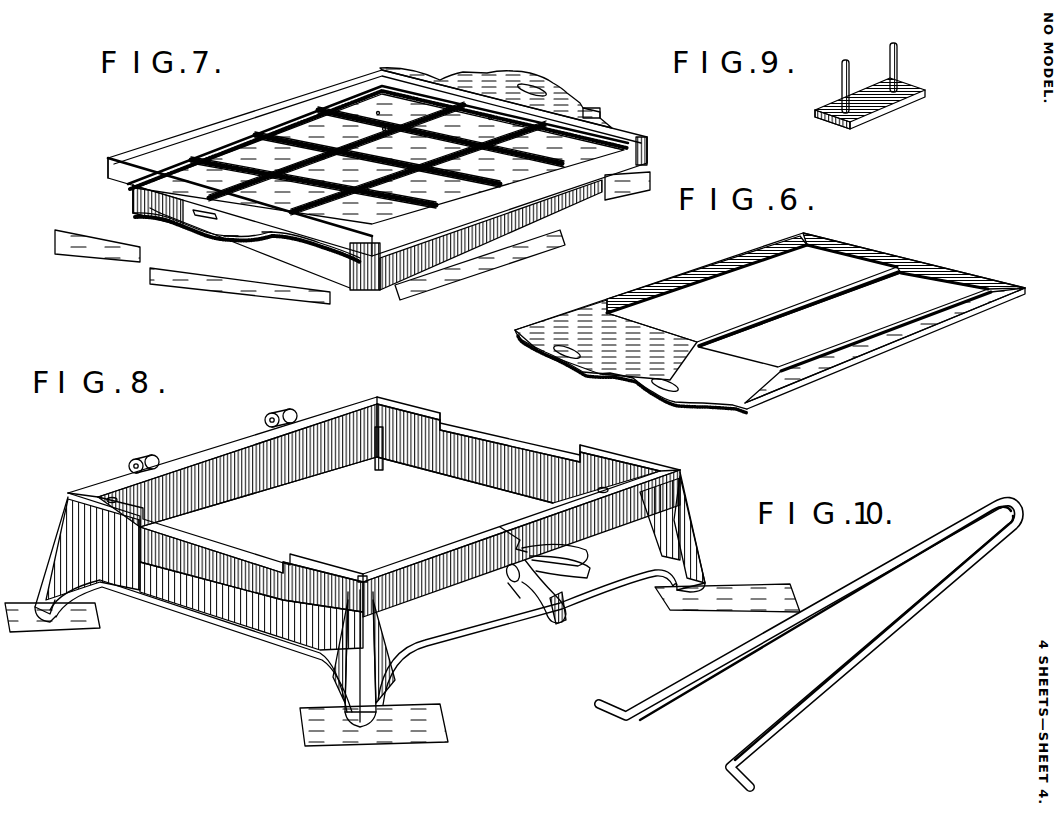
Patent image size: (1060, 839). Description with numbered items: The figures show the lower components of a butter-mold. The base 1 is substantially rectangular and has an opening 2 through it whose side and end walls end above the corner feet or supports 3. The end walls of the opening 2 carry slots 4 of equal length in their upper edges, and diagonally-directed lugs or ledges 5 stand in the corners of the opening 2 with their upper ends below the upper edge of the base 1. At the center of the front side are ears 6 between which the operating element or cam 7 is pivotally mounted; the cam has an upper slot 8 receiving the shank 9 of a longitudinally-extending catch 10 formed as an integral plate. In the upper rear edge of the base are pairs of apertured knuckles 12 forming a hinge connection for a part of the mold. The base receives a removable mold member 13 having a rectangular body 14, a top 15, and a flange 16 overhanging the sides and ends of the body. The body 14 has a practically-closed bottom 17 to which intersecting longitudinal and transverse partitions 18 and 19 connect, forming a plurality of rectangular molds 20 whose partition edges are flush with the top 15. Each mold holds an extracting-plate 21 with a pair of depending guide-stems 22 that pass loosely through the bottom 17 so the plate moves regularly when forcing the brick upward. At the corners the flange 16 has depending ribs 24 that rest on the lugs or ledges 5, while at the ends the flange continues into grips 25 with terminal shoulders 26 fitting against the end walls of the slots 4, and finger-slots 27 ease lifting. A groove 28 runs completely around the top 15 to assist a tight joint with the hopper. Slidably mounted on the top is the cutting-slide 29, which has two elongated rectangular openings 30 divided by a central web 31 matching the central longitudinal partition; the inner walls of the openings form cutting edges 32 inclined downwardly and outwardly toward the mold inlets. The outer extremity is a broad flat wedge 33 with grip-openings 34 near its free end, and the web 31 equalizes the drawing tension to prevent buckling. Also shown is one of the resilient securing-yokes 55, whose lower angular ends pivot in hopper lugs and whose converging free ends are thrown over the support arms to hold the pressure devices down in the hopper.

In FIG. 8, the base 1 is at (205, 631).
In FIG. 8, the opening 2 is at (340, 425).
In FIG. 8, the corner feet or supports 3 is at (38, 603).
In FIG. 8, the slots 4 is at (243, 557).
In FIG. 8, the lugs or ledges 5 is at (110, 496).
In FIG. 8, the ears 6 is at (511, 535).
In FIG. 8, the operating element or cam 7 is at (553, 612).
In FIG. 8, the upper slot 8 is at (520, 601).
In FIG. 8, the shank 9 is at (573, 572).
In FIG. 8, the catch 10 is at (583, 541).
In FIG. 8, the apertured knuckles 12 is at (152, 455).
In FIG. 7, the removable mold member 13 is at (182, 226).
In FIG. 7, the rectangular body 14 is at (338, 270).
In FIG. 7, the top 15 is at (160, 168).
In FIG. 7, the flange 16 is at (132, 188).
In FIG. 7, the bottom 17 is at (498, 238).
In FIG. 7, the longitudinal partitions 18 is at (378, 112).
In FIG. 7, the transverse partitions 19 is at (384, 128).
In FIG. 7, the rectangular molds 20 is at (490, 118).
In FIG. 7, the extracting-plates 21 is at (232, 165).
In FIG. 9, the extracting-plates 21 is at (886, 113).
In FIG. 9, the guide-stems 22 is at (893, 50).
In FIG. 7, the depending ribs 24 is at (106, 180).
In FIG. 7, the grips 25 is at (572, 100).
In FIG. 7, the terminal shoulders 26 is at (606, 115).
In FIG. 7, the finger-slots 27 is at (535, 86).
In FIG. 7, the groove 28 is at (275, 108).
In FIG. 6, the cutting-slide 29 is at (670, 280).
In FIG. 6, the elongated rectangular openings 30 is at (824, 260).
In FIG. 6, the central web 31 is at (735, 330).
In FIG. 6, the cutting edges 32 is at (862, 262).
In FIG. 6, the broad flat wedge 33 is at (622, 367).
In FIG. 6, the grip-openings 34 is at (552, 360).
In FIG. 10, the resilient securing-yokes 55 is at (860, 660).